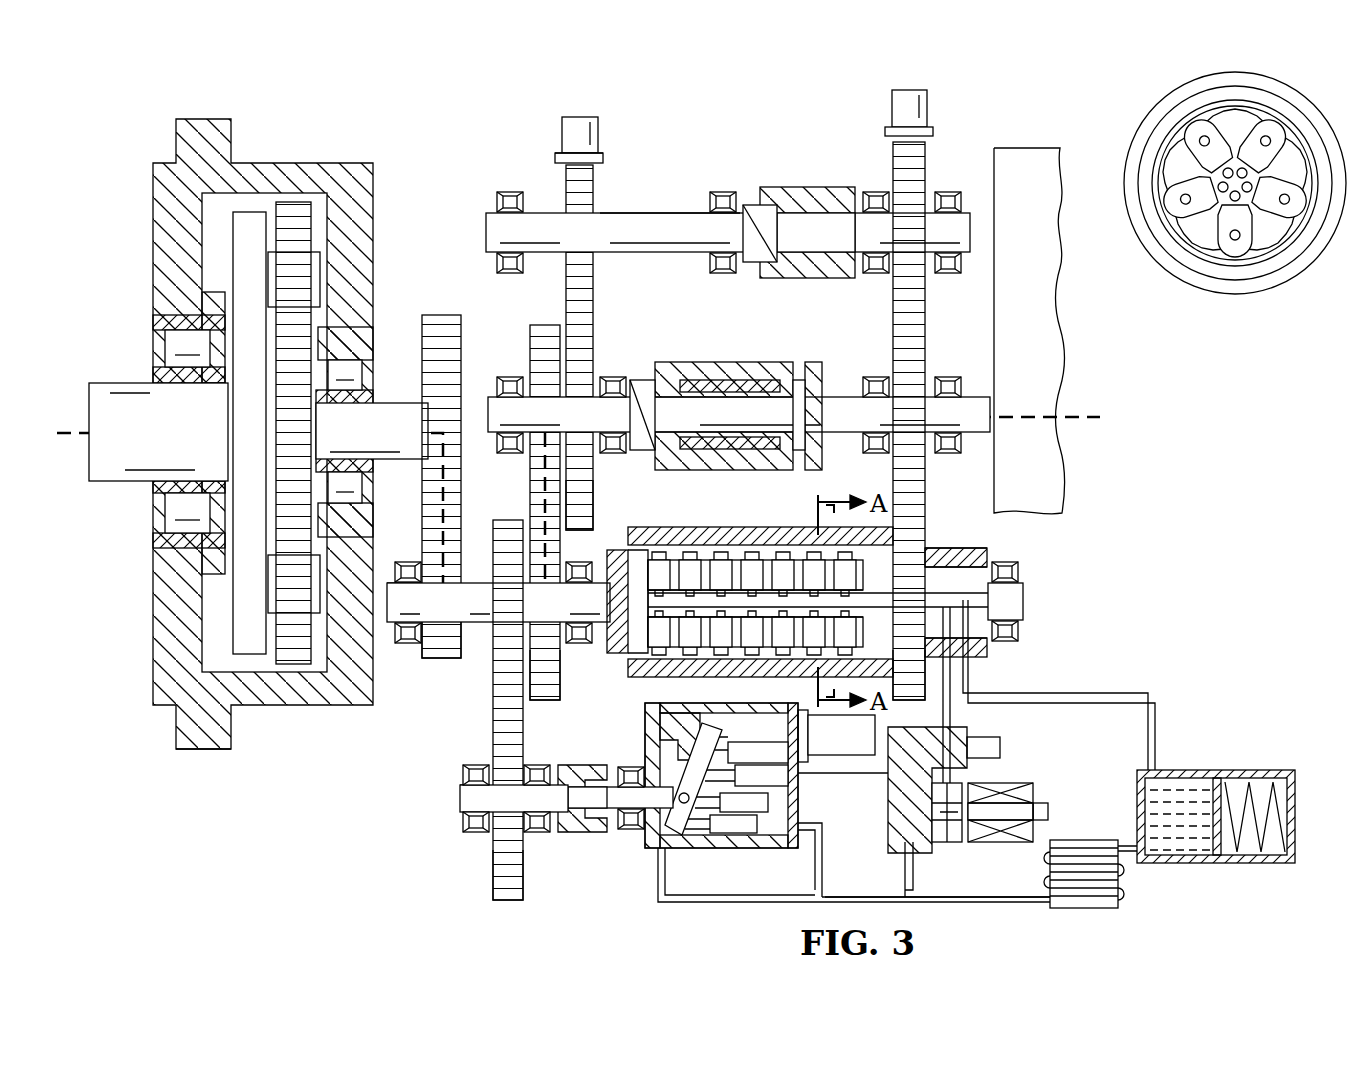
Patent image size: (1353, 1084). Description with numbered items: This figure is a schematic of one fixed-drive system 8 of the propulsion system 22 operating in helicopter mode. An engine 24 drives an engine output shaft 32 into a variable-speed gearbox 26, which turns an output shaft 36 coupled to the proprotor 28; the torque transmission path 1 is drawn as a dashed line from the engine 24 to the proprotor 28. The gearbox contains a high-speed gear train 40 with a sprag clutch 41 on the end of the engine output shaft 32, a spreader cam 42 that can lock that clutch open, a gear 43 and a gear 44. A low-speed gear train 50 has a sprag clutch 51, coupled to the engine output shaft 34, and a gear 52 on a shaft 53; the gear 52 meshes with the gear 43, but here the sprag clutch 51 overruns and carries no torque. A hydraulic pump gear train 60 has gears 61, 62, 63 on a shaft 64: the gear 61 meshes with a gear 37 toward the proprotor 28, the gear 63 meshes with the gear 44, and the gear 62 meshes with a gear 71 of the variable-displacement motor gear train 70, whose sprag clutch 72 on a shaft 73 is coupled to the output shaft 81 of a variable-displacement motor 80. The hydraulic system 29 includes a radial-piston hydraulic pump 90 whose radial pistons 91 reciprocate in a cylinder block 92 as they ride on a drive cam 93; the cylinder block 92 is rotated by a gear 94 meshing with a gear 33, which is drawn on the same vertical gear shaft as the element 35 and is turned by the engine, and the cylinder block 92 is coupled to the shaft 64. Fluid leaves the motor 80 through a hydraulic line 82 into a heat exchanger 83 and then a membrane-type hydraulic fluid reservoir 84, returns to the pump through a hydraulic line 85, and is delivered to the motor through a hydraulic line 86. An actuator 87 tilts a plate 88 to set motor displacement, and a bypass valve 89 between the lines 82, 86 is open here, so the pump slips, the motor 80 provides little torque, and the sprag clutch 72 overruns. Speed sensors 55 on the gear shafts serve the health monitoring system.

The torque transmission path 1 is at (1100, 417).
The fixed-drive system 8 is at (388, 102).
The propulsion system 22 is at (189, 801).
The engine 24 is at (1030, 148).
The variable-speed gearbox 26 is at (638, 100).
The proprotor 28 is at (184, 102).
The hydraulic system 29 is at (646, 898).
The engine output shaft 32 is at (985, 435).
The gear 33 is at (927, 360).
The engine output shaft 34 is at (785, 278).
The gear 35 is at (927, 160).
The output shaft 36 is at (402, 405).
The gear 37 is at (440, 315).
The high-speed gear train 40 is at (476, 262).
The sprag clutch 41 is at (710, 365).
The spreader cam 42 is at (820, 365).
The gear 43 is at (594, 340).
The gear 44 is at (528, 338).
The low-speed gear train 50 is at (540, 190).
The sprag clutch 51 is at (805, 190).
The gear 52 is at (595, 185).
The shaft 53 is at (668, 213).
The speed sensors 55 is at (580, 115).
The hydraulic pump gear train 60 is at (398, 703).
The gear 61 is at (447, 660).
The gear 62 is at (508, 520).
The gear 63 is at (560, 688).
The shaft 64 is at (480, 625).
The variable-displacement motor gear train 70 is at (470, 879).
The gear 71 is at (510, 900).
The sprag clutch 72 is at (575, 835).
The shaft 73 is at (455, 795).
The variable-displacement motor 80 is at (650, 735).
The output shaft 81 is at (615, 815).
The hydraulic line 82 is at (980, 903).
The heat exchanger 83 is at (1085, 908).
The hydraulic fluid reservoir 84 is at (1220, 863).
The hydraulic line 85 is at (1090, 693).
The hydraulic line 86 is at (880, 792).
The actuator 87 is at (828, 757).
The plate 88 is at (690, 745).
The bypass valve 89 is at (1033, 800).
The hydraulic pump 90 is at (985, 652).
The radial pistons 91 is at (730, 545).
The cylinder block 92 is at (1160, 180).
The drive cam 93 is at (685, 545).
The gear 94 is at (930, 540).